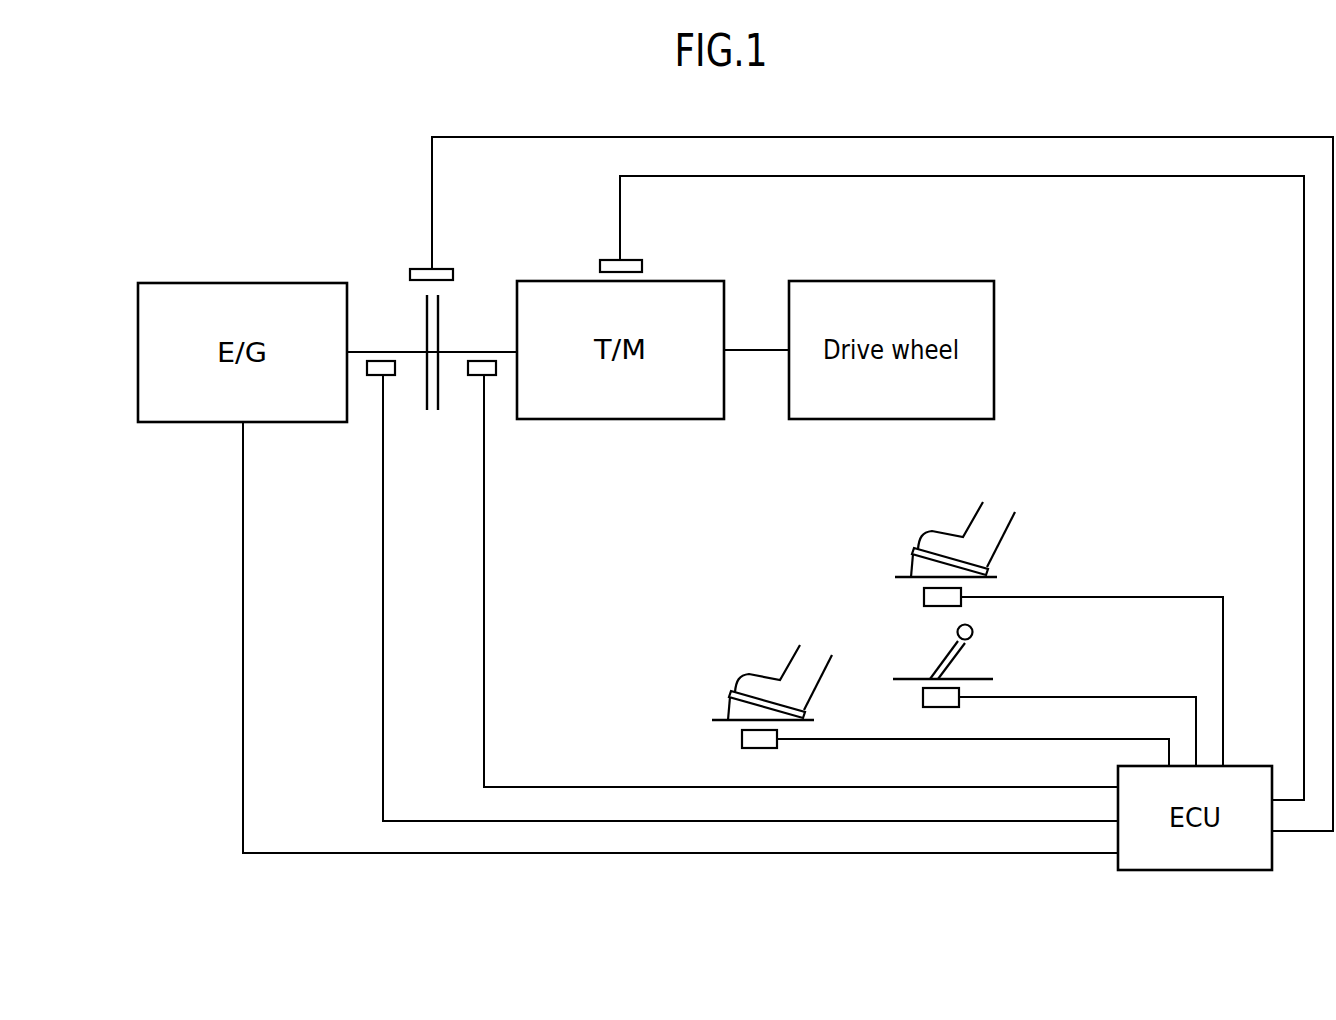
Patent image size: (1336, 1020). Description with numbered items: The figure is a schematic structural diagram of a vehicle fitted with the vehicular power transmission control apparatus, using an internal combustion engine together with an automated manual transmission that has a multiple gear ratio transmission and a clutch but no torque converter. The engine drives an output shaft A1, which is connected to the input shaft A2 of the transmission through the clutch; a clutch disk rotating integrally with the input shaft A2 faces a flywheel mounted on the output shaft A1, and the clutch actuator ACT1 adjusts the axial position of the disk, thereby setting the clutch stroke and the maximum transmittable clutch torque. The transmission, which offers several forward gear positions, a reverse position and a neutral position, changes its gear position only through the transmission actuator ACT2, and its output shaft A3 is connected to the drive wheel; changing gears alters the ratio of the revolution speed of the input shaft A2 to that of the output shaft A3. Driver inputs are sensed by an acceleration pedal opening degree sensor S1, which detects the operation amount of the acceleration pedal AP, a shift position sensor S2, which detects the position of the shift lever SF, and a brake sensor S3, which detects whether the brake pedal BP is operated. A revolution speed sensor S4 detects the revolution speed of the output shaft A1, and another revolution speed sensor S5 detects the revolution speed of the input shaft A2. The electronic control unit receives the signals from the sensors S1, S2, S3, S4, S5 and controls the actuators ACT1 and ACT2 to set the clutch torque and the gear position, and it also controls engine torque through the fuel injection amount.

The clutch actuator ACT1 is at (442, 268).
The T/M actuator ACT2 is at (630, 260).
The output shaft of the E/G A1 is at (377, 352).
The input shaft of the T/M A2 is at (475, 352).
The output shaft of the T/M A3 is at (752, 350).
The acceleration pedal opening degree sensor S1 is at (924, 597).
The shift position sensor S2 is at (923, 697).
The brake sensor S3 is at (742, 739).
The revolution speed sensor S4 is at (377, 377).
The revolution speed sensor S5 is at (492, 377).
The acceleration pedal AP is at (912, 555).
The brake pedal BP is at (729, 698).
The shift lever SF is at (942, 655).